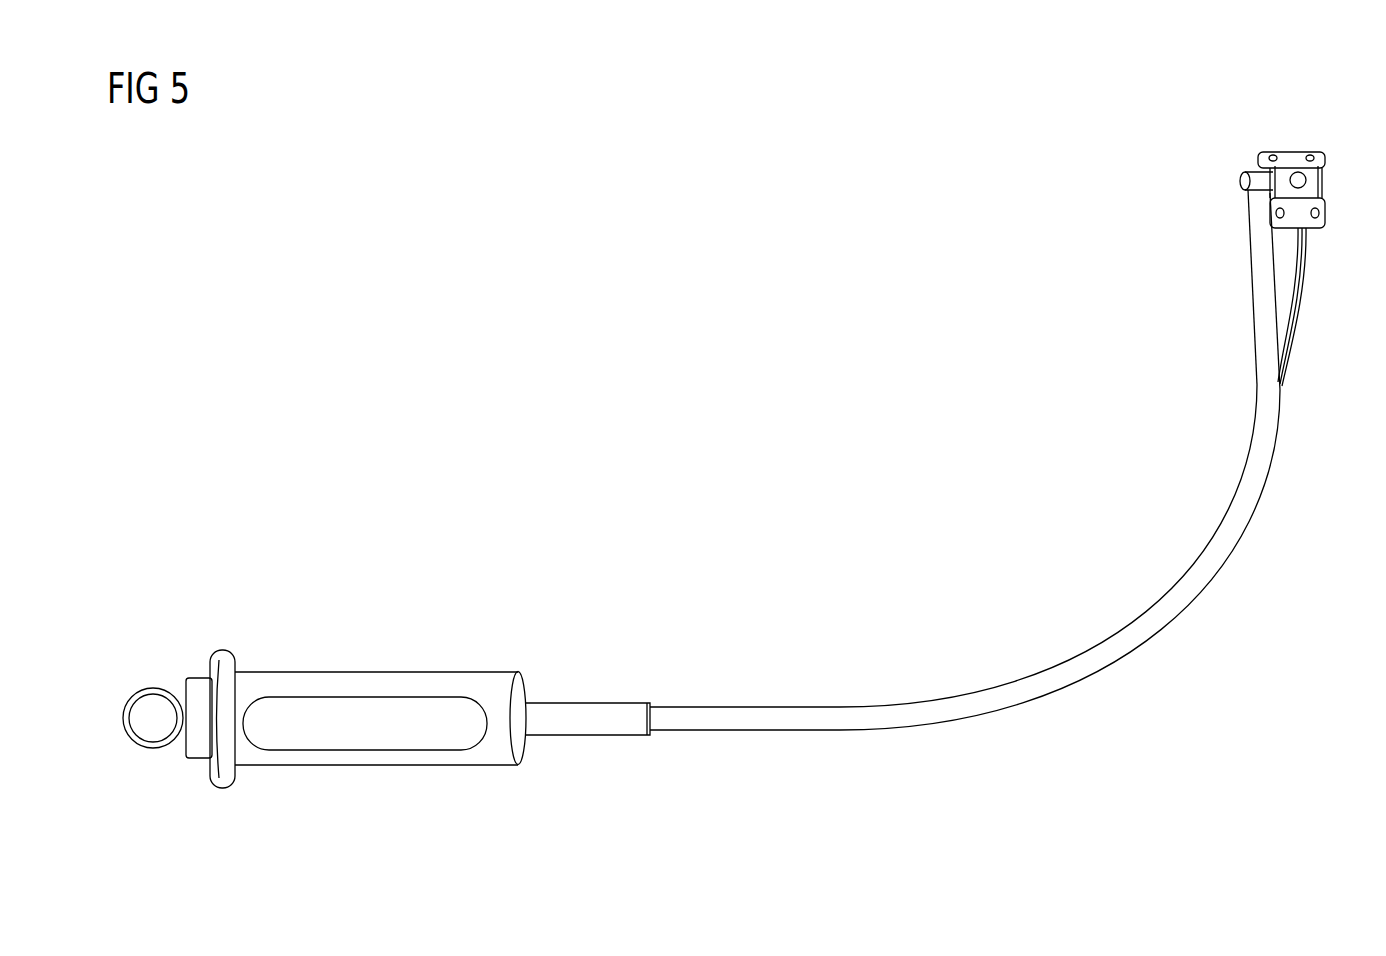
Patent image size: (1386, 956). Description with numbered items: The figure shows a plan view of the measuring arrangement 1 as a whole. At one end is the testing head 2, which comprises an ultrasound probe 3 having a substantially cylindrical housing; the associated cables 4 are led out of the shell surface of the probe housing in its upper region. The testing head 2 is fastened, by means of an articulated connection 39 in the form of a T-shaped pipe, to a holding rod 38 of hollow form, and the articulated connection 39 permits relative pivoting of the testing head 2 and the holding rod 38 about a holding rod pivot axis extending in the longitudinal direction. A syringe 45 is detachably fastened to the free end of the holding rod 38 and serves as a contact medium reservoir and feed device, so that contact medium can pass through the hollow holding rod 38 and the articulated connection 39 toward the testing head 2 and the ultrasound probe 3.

The measuring arrangement 1 is at (1068, 733).
The testing head 2 is at (1219, 148).
The ultrasound probe 3 is at (1298, 172).
The cables 4 is at (1302, 258).
The holding rod 38 is at (1262, 320).
The articulated connection 39 is at (1238, 181).
The syringe 45 is at (390, 683).